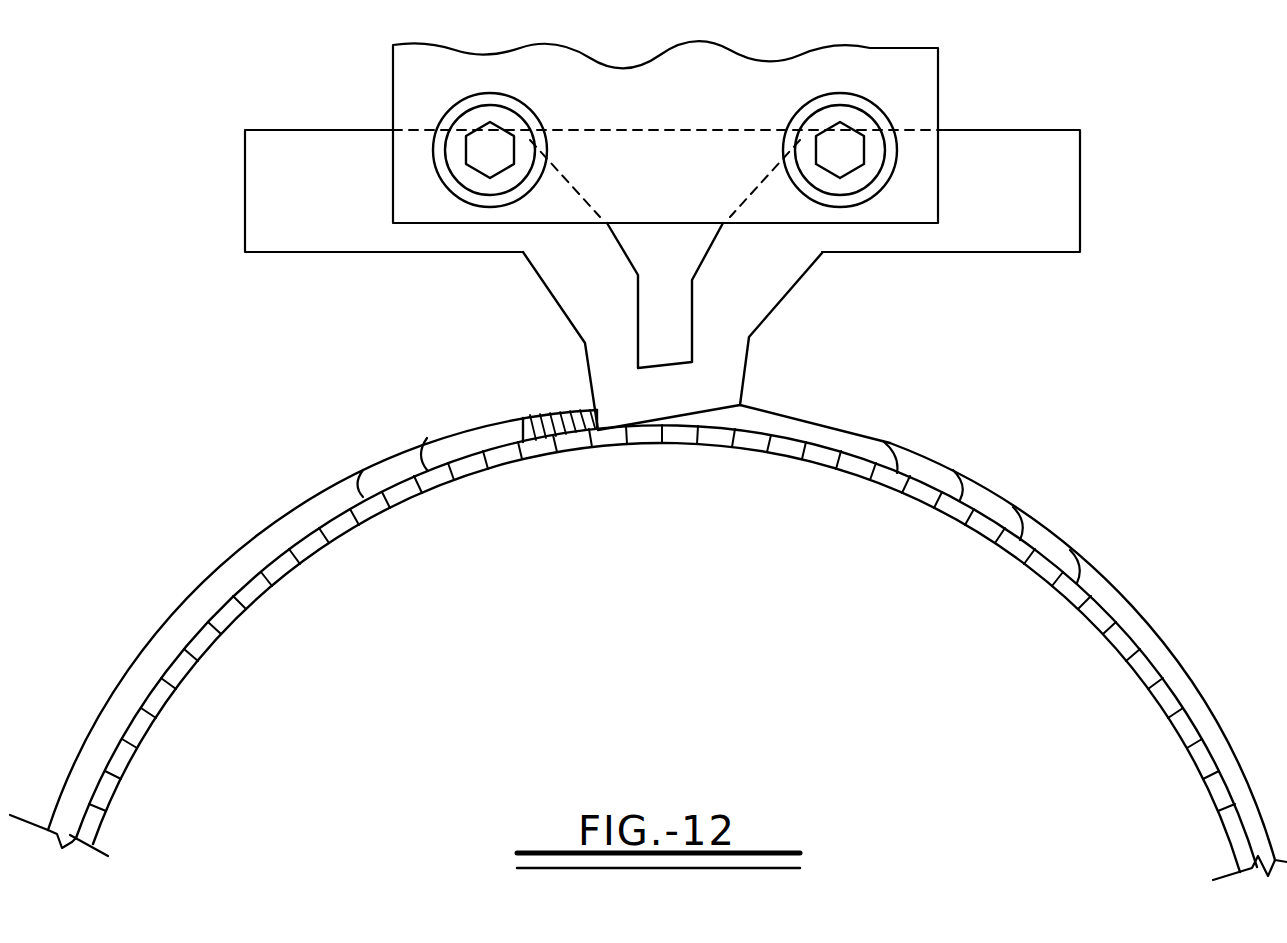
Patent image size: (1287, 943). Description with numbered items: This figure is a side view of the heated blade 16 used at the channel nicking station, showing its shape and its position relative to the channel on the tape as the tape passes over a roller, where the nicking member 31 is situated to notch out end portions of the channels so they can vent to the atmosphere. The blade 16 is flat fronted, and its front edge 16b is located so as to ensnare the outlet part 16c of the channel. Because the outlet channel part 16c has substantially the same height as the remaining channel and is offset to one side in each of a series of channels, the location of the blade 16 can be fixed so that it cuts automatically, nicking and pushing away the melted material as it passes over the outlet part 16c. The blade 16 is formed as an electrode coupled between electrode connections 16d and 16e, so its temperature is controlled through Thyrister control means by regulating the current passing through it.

The heated blade 16 is at (793, 265).
The nicking member 31 is at (760, 367).
The front edge 16b is at (600, 447).
The outlet part of the channel 16c is at (542, 405).
The electrode connection 16d is at (525, 150).
The electrode connection 16e is at (803, 153).